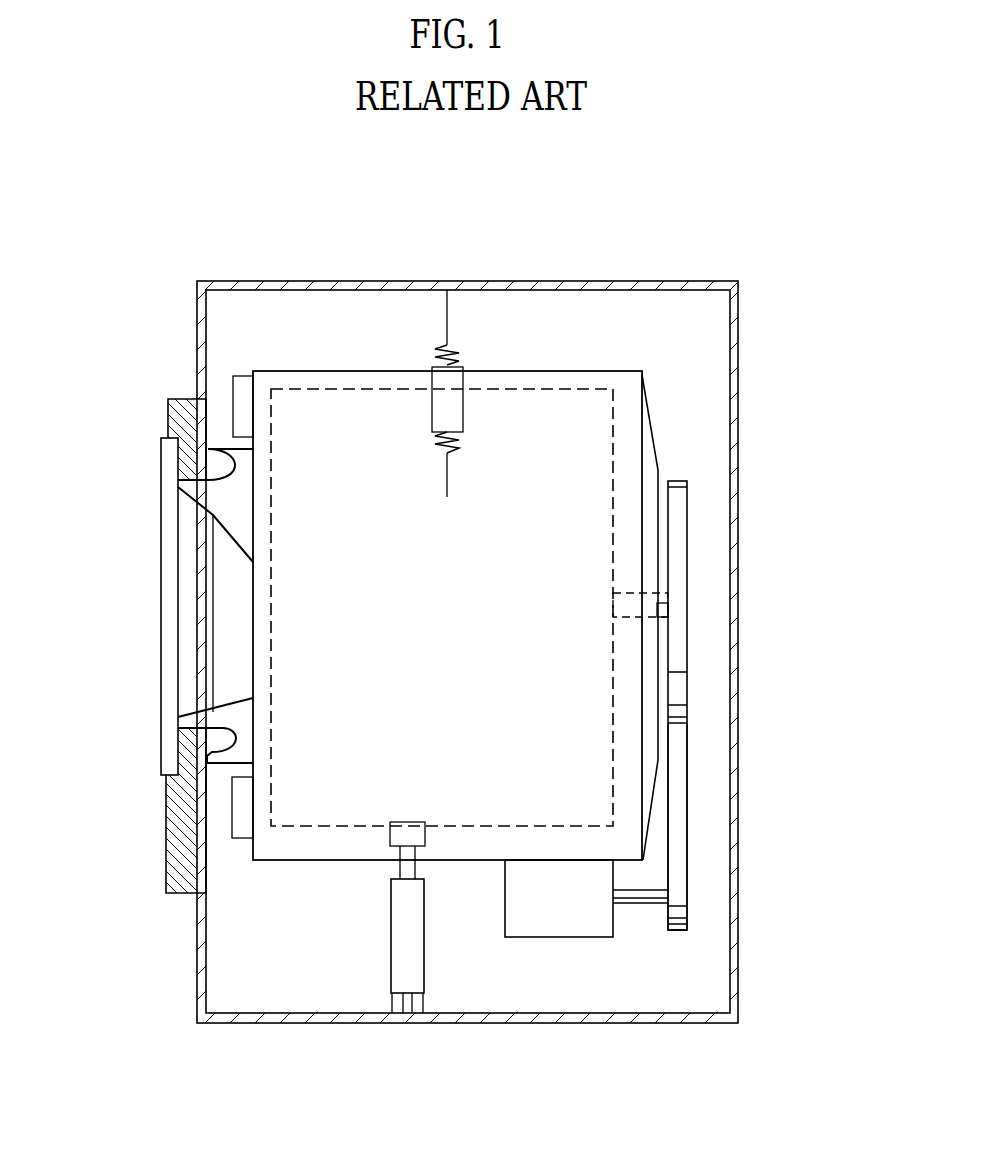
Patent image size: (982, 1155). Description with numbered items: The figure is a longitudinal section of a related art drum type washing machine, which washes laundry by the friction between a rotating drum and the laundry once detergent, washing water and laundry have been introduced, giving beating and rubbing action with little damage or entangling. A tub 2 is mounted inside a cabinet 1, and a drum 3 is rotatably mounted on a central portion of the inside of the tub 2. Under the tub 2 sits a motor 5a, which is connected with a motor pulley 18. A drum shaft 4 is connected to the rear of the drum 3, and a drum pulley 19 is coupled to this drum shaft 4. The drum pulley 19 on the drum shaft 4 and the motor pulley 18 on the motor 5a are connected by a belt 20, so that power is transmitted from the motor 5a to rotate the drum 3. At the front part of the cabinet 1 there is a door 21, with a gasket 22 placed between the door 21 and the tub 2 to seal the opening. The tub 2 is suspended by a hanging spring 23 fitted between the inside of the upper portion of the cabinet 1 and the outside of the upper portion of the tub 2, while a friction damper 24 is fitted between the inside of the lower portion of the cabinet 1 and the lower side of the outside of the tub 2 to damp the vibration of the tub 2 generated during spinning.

The cabinet 1 is at (274, 281).
The tub 2 is at (562, 368).
The drum 3 is at (360, 388).
The drum shaft 4 is at (663, 605).
The motor 5a is at (553, 920).
The motor pulley 18 is at (680, 897).
The drum pulley 19 is at (680, 560).
The belt 20 is at (682, 803).
The door 21 is at (168, 603).
The gasket 22 is at (222, 762).
The hanging spring 23 is at (459, 352).
The friction damper 24 is at (398, 952).